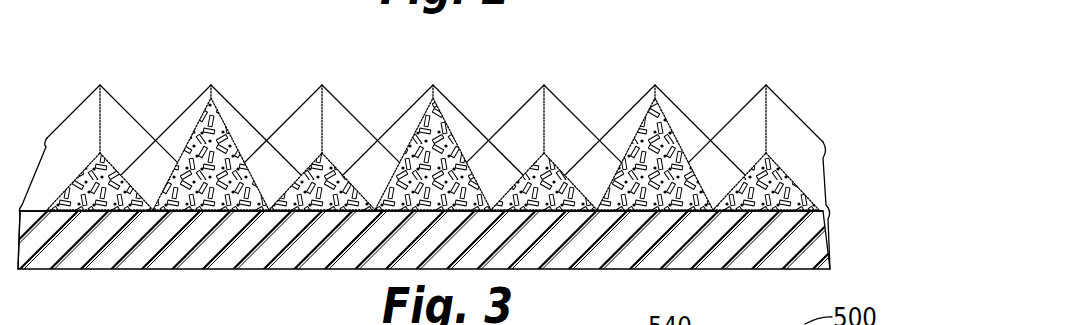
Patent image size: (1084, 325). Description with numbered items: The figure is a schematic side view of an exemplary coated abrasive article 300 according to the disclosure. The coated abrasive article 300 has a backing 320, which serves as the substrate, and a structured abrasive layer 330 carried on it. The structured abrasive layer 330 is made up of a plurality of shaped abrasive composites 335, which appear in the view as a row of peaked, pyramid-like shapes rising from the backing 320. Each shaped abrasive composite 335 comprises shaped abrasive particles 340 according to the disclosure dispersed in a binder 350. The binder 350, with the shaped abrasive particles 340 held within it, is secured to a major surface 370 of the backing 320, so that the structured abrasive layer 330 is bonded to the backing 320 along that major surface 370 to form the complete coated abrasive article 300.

The coated abrasive article 300 is at (772, 28).
The backing 320 is at (818, 241).
The structured abrasive layer 330 is at (778, 85).
The shaped abrasive composites 335 is at (407, 123).
The shaped abrasive particles 340 is at (183, 153).
The binder 350 is at (467, 163).
The major surface 370 is at (35, 211).